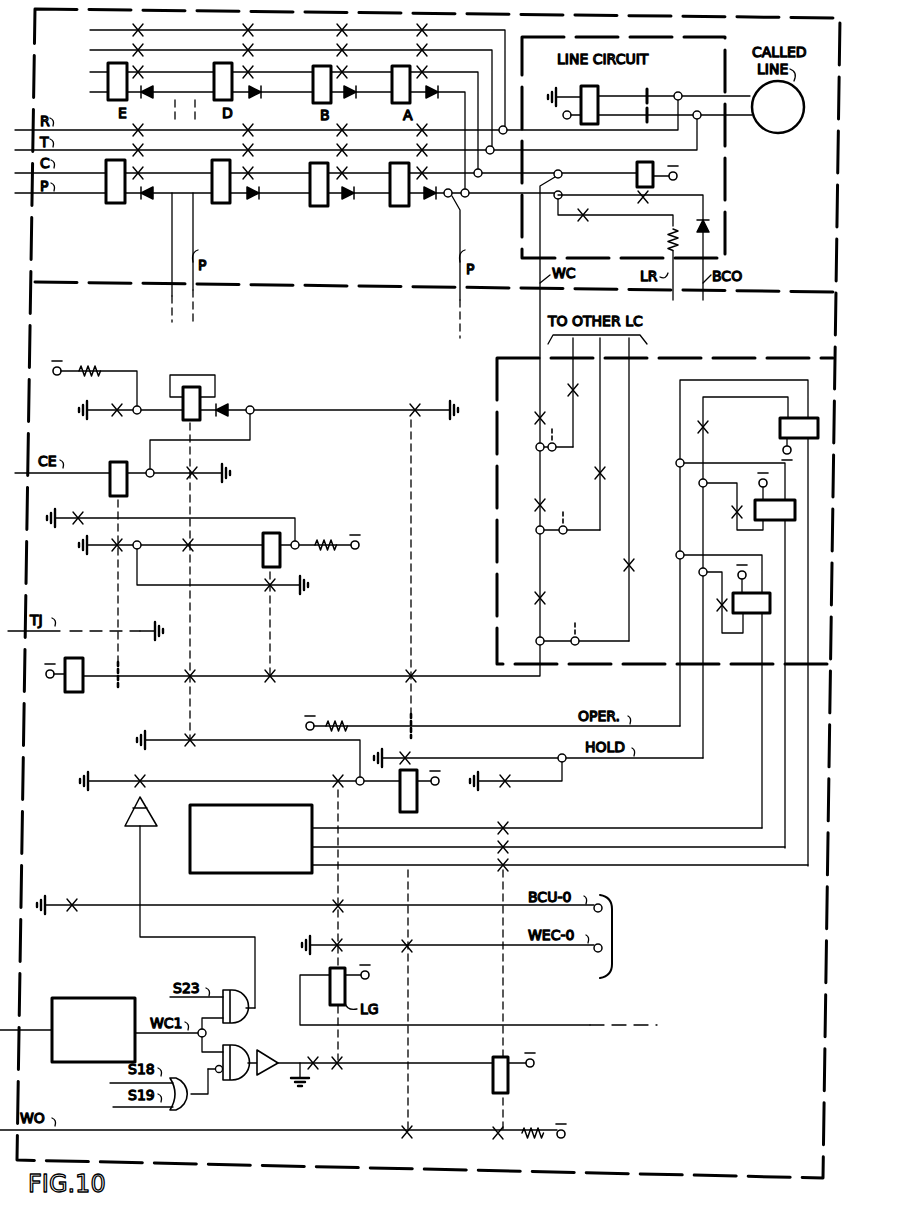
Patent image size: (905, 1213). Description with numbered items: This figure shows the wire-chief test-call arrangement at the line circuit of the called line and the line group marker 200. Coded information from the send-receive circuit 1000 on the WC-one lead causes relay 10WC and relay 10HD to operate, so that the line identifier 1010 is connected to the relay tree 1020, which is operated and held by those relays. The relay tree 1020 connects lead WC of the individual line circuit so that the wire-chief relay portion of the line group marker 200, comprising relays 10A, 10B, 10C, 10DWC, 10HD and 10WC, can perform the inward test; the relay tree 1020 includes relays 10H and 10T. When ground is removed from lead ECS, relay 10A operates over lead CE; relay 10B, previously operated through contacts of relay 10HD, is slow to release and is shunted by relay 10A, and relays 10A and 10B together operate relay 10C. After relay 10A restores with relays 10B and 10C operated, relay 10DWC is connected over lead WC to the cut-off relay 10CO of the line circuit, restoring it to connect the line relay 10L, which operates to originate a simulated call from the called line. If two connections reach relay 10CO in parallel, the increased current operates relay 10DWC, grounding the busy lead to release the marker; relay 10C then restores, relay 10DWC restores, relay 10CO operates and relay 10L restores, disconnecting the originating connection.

The line relay 10L is at (588, 86).
The cut-off relay 10CO is at (640, 166).
The B relay 10B is at (210, 365).
The A relay 10A is at (124, 460).
The C relay 10C is at (264, 558).
The DWC relay 10DWC is at (83, 690).
The HD relay 10HD is at (417, 808).
The WC relay 10WC is at (512, 1044).
The H relay 10H is at (778, 438).
The T relay 10T is at (765, 513).
The relay tree 1020 is at (745, 604).
The line identifier 1010 is at (251, 839).
The send-receive circuit 1000 is at (93, 1030).
The line group marker 200 is at (684, 1132).